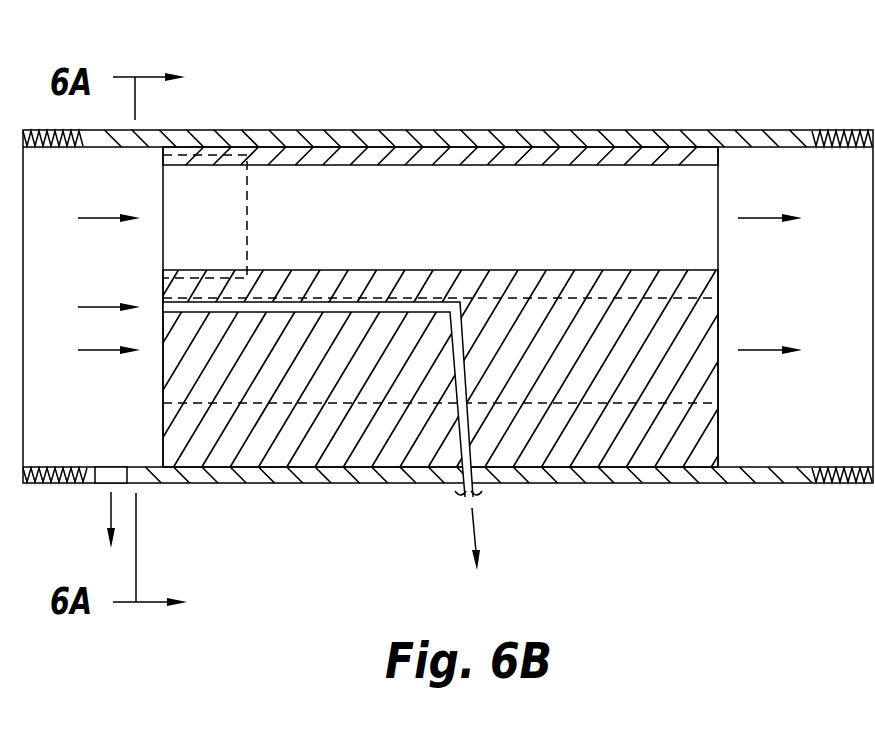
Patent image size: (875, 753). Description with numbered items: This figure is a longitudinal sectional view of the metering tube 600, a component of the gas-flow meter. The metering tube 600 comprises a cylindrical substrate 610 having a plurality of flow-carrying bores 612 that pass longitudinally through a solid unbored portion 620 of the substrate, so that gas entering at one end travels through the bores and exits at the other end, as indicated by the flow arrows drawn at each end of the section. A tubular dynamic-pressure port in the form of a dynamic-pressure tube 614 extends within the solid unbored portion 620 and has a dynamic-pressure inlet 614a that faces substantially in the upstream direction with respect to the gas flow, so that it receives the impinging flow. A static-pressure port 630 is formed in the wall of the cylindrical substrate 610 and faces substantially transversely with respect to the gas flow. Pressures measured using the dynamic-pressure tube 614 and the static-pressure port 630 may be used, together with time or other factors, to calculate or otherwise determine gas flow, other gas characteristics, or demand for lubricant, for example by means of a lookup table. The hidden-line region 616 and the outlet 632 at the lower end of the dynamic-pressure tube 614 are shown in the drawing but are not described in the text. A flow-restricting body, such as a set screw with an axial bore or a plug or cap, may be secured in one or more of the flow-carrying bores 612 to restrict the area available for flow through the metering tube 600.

The metering tube 600 is at (744, 104).
The cylindrical substrate 610 is at (537, 130).
The flow-carrying bores 612 is at (415, 166).
The dynamic-pressure tube 614 is at (397, 308).
The dynamic-pressure inlet 614a is at (163, 303).
The hidden region 616 is at (203, 152).
The solid unbored portion 620 is at (320, 153).
The static-pressure port 630 is at (111, 508).
The drain channel outlet 632 is at (473, 522).